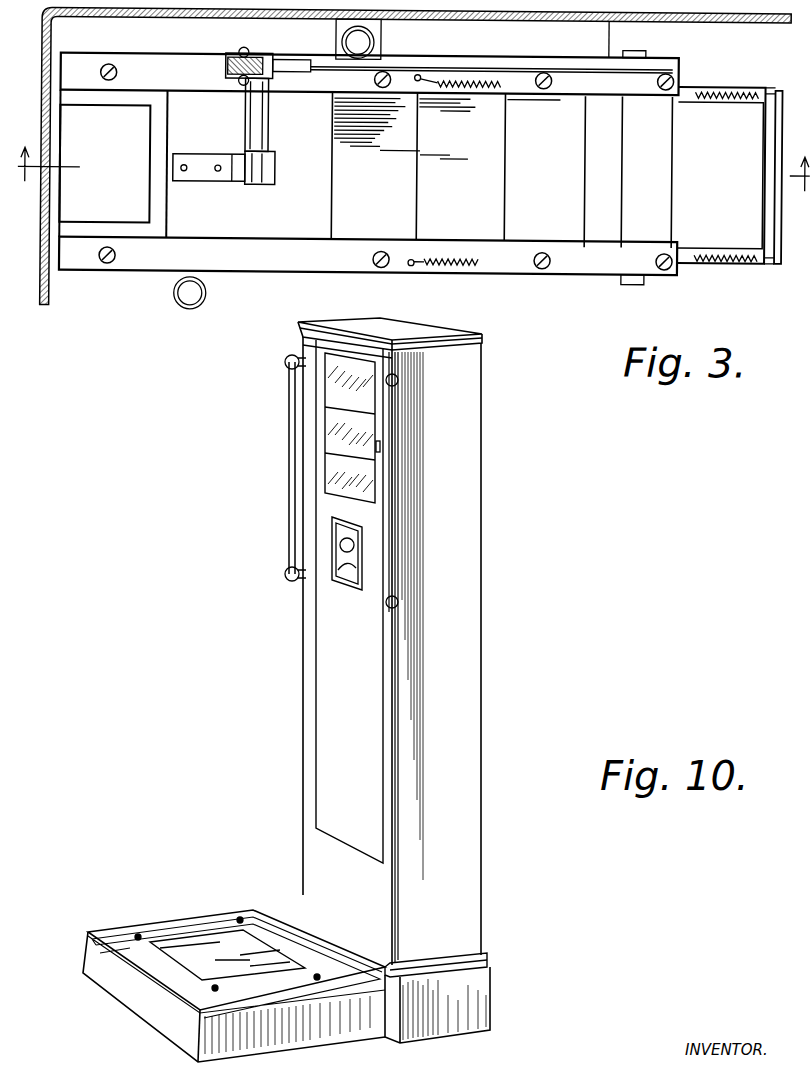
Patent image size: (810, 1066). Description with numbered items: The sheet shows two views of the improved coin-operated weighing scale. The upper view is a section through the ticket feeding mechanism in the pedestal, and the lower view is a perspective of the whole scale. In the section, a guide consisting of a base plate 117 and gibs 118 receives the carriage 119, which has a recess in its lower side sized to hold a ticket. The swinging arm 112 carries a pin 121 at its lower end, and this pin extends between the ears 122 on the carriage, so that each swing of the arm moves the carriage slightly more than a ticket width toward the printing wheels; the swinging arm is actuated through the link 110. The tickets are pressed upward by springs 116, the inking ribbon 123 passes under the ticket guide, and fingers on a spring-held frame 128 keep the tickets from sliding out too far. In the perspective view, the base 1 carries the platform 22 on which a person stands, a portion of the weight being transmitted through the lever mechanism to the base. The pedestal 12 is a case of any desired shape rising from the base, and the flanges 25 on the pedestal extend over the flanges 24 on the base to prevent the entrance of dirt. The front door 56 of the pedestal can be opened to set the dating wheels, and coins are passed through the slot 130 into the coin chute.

In FIG. 3, the link 110 is at (520, 55).
In FIG. 3, the swinging arm 112 is at (226, 62).
In FIG. 3, the springs 116 is at (374, 42).
In FIG. 3, the base plate 117 is at (150, 162).
In FIG. 3, the gibs 118 is at (369, 164).
In FIG. 3, the carriage 119 is at (222, 186).
In FIG. 3, the pin 121 is at (260, 134).
In FIG. 3, the ears 122 is at (240, 174).
In FIG. 3, the inking ribbon 123 is at (620, 286).
In FIG. 3, the spring-held frame 128 is at (712, 242).
In FIG. 10, the pedestal 12 is at (460, 841).
In FIG. 10, the front door 56 is at (328, 437).
In FIG. 10, the slot 130 is at (376, 447).
In FIG. 10, the flanges 25 is at (488, 949).
In FIG. 10, the flanges 24 is at (470, 968).
In FIG. 10, the base 1 is at (305, 1025).
In FIG. 10, the platform 22 is at (205, 945).